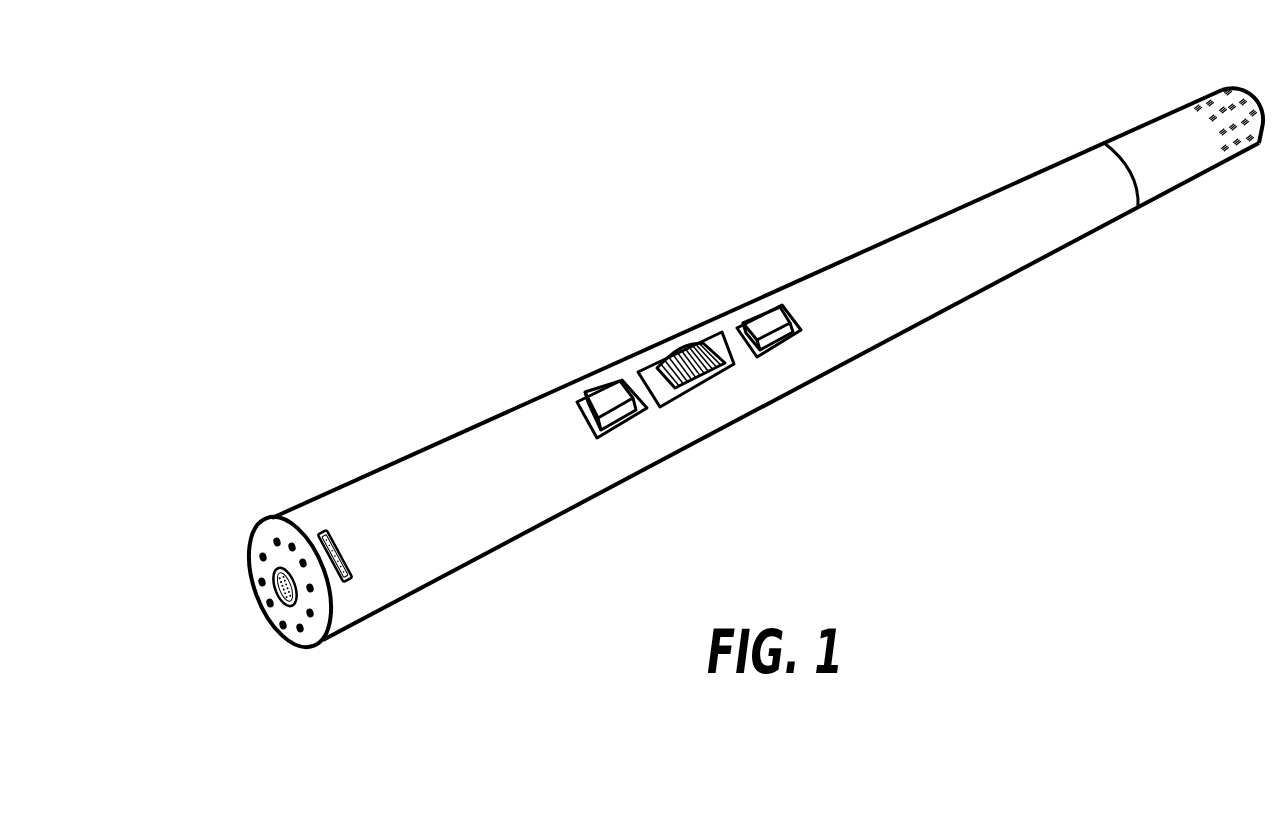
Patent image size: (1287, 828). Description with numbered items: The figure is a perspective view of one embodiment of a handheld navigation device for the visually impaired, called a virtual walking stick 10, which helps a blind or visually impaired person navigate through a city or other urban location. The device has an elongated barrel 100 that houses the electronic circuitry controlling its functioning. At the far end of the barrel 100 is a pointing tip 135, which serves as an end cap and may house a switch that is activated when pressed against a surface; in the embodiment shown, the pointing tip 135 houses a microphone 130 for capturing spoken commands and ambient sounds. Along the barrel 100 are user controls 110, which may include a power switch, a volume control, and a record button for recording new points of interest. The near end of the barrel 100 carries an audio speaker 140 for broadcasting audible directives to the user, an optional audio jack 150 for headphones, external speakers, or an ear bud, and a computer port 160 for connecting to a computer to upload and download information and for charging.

The virtual walking stick 10 is at (412, 424).
The barrel 100 is at (872, 277).
The user controls 110 is at (762, 320).
The microphone 130 is at (1203, 95).
The pointing tip 135 is at (1163, 160).
The audio speaker 140 is at (258, 575).
The audio jack 150 is at (280, 592).
The computer port 160 is at (347, 578).